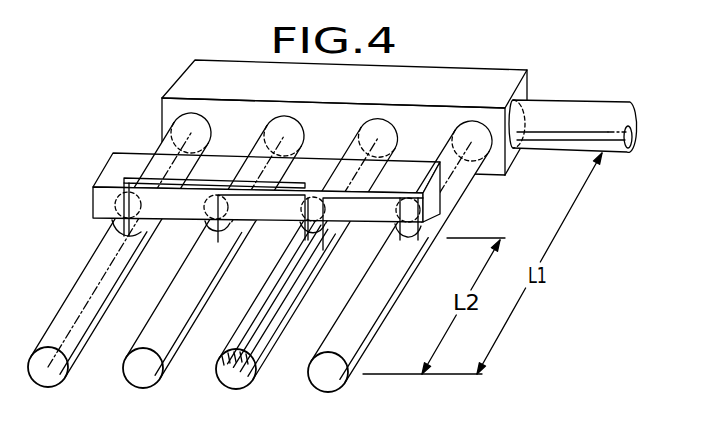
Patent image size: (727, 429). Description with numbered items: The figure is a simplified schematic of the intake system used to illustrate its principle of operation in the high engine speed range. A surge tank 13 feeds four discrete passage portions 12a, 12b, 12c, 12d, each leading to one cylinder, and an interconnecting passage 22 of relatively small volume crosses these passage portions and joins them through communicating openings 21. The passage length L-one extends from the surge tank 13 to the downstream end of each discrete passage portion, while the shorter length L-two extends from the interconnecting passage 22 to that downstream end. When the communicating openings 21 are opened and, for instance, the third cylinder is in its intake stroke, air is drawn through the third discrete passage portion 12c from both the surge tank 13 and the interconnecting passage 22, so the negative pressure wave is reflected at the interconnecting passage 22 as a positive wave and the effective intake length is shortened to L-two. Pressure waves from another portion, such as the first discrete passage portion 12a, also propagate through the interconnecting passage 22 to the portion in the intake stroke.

The surge tank 13 is at (172, 87).
The interconnecting passage 22 is at (104, 182).
The communicating openings 21 is at (121, 229).
The first discrete passage portion 12a is at (81, 276).
The second discrete passage portion 12b is at (152, 377).
The third discrete passage portion 12c is at (245, 378).
The fourth discrete passage portion 12d is at (318, 377).